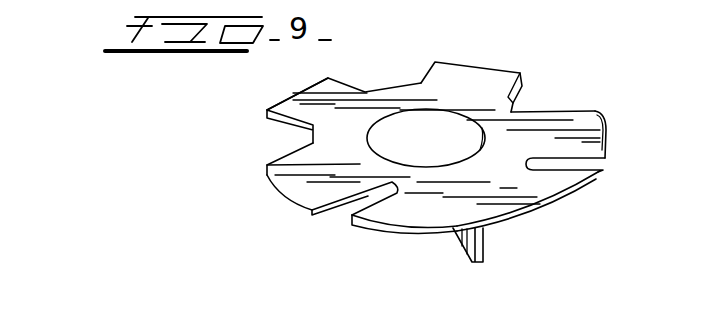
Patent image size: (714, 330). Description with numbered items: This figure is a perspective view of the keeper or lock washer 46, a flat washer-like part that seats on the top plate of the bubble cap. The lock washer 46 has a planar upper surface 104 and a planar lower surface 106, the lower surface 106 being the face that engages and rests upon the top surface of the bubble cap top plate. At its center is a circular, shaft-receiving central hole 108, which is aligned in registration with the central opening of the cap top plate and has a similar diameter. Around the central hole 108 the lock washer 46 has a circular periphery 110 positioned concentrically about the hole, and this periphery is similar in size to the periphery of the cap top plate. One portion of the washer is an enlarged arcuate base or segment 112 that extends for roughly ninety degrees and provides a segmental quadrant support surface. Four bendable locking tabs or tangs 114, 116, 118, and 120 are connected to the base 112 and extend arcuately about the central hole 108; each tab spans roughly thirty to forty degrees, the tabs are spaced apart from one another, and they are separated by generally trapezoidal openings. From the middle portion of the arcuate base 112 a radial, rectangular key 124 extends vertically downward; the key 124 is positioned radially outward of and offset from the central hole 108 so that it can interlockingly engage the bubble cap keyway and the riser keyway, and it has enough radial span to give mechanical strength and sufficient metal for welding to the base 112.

The keeper or lock washer 46 is at (253, 178).
The upper surface 104 is at (511, 110).
The lower surface 106 is at (388, 232).
The central hole 108 is at (403, 109).
The circular periphery 110 is at (582, 188).
The arcuate base or segment 112 is at (505, 208).
The locking tab or tang 114 is at (603, 132).
The locking tab or tang 116 is at (467, 67).
The locking tab or tang 118 is at (297, 92).
The locking tab or tang 120 is at (289, 205).
The radial rectangular key 124 is at (313, 133).